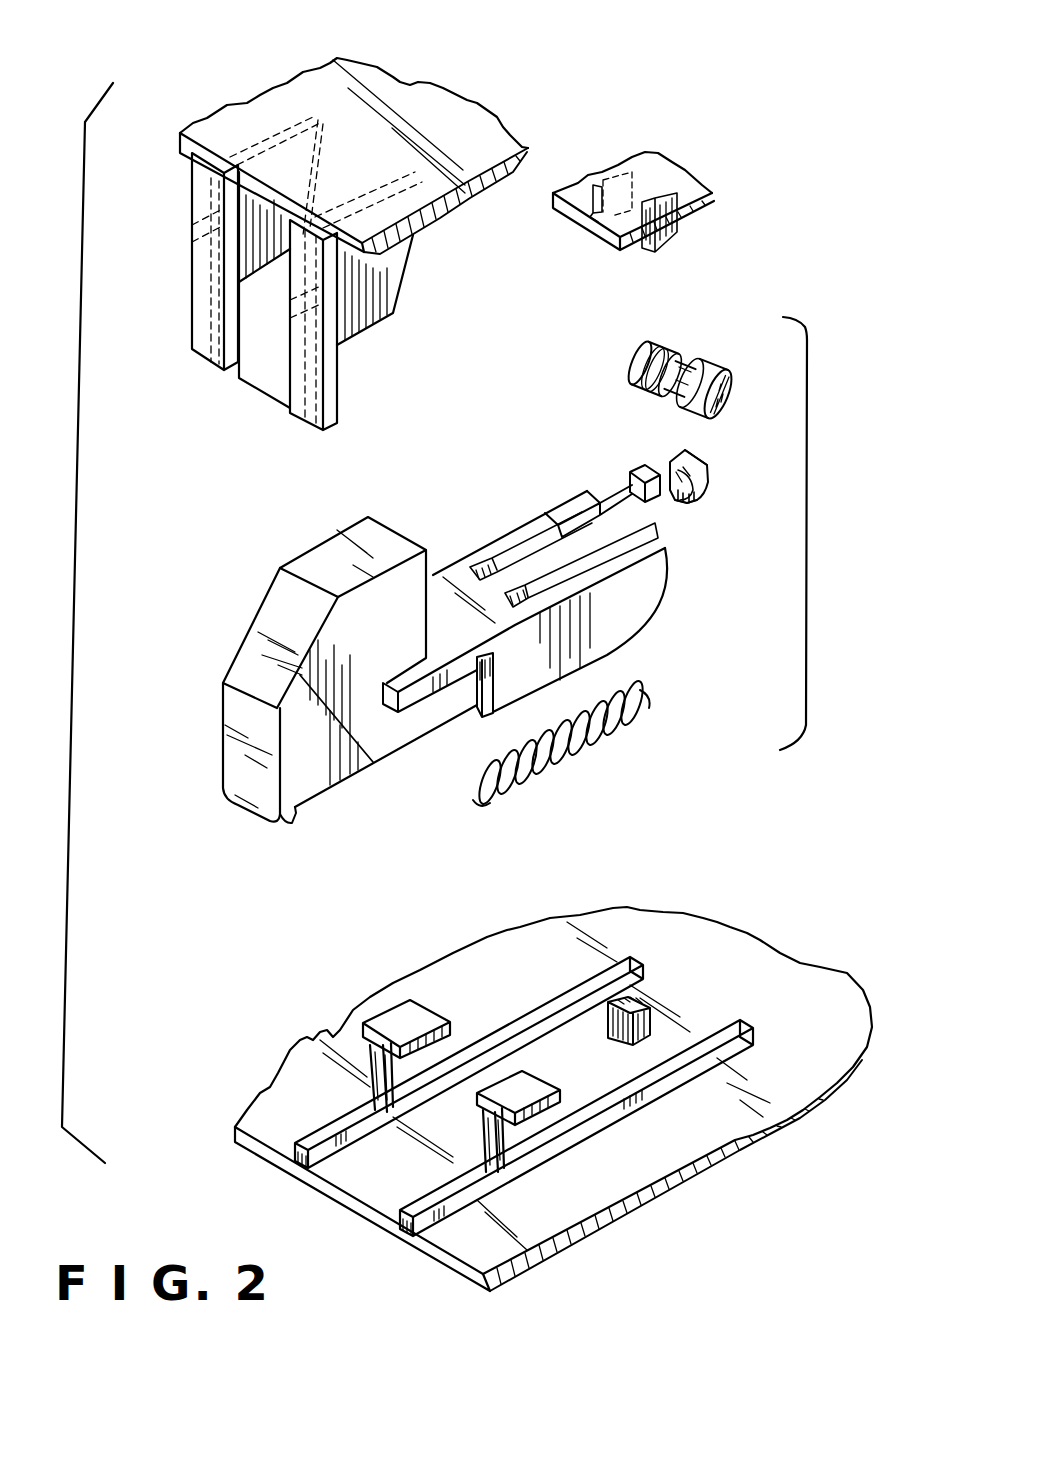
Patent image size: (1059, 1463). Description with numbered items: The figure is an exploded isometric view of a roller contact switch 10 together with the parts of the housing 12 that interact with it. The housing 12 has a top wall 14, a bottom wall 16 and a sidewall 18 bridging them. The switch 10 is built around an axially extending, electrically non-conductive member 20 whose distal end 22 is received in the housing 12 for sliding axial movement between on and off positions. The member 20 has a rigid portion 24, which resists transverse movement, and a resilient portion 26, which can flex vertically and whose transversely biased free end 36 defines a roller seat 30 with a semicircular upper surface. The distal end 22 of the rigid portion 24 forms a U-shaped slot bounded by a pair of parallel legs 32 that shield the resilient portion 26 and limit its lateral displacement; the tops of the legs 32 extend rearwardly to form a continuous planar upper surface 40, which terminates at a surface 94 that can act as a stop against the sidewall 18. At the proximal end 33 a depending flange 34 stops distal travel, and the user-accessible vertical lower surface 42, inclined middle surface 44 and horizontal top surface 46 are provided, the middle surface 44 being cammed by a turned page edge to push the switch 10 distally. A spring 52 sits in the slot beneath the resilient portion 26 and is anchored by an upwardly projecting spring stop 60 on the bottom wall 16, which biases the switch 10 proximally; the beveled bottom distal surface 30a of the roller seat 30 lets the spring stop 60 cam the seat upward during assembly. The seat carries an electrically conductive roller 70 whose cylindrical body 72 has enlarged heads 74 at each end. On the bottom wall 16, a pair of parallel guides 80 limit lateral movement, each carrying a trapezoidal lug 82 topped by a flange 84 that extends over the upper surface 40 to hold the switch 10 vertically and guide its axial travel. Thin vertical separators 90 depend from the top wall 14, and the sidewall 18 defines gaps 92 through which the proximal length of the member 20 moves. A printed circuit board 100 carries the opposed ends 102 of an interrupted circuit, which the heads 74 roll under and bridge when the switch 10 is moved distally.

The roller contact switch 10 is at (806, 532).
The housing 12 is at (420, 78).
The top wall 14 is at (468, 100).
The bottom wall 16 is at (817, 990).
The sidewall 18 is at (201, 270).
The non-conductive member 20 is at (287, 624).
The distal end 22 is at (587, 503).
The rigid portion 24 is at (236, 712).
The resilient portion 26 is at (558, 543).
The roller seat 30 is at (670, 482).
The bottom distal surface 30a is at (693, 503).
The legs 32 is at (522, 523).
The proximal end 33 is at (233, 763).
The depending flange 34 is at (290, 820).
The free end 36 is at (700, 458).
The upper surface 40 is at (470, 560).
The lower surface 42 is at (273, 743).
The middle surface 44 is at (355, 750).
The top surface 46 is at (337, 550).
The spring 52 is at (526, 787).
The spring stop 60 is at (615, 1043).
The roller 70 is at (627, 355).
The cylindrical body 72 is at (692, 360).
The enlarged heads 74 is at (658, 337).
The guides 80 is at (320, 1130).
The lug 82 is at (330, 1030).
The flange 84 is at (400, 1018).
The vertical separators 90 is at (250, 247).
The gaps 92 is at (258, 392).
The surface 94 is at (389, 706).
The printed circuit board 100 is at (673, 182).
The opposed ends 102 is at (660, 182).